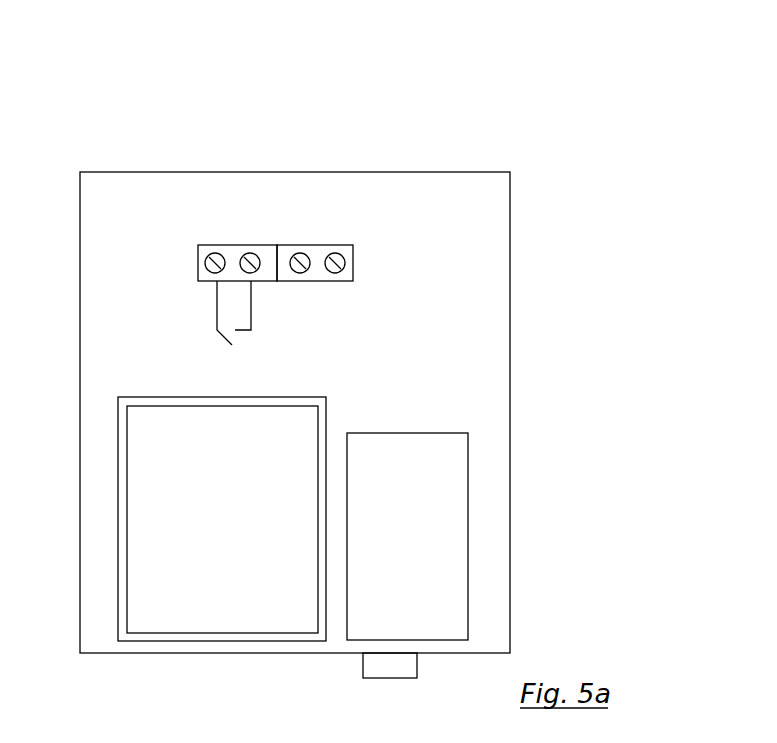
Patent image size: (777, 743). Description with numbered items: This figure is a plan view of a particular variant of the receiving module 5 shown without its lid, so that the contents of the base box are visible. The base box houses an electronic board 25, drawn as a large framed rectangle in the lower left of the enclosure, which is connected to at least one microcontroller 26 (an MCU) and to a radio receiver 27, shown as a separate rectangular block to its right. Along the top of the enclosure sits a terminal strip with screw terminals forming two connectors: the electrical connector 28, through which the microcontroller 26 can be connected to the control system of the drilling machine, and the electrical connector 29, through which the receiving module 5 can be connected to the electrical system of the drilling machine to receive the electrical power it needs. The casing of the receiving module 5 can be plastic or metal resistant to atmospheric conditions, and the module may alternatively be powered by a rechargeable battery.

The receiving module 5 is at (427, 131).
The electronic board 25 is at (122, 405).
The microcontroller 26 is at (165, 598).
The radio receiver 27 is at (447, 535).
The electrical connector 28 is at (228, 247).
The electrical connector 29 is at (313, 247).